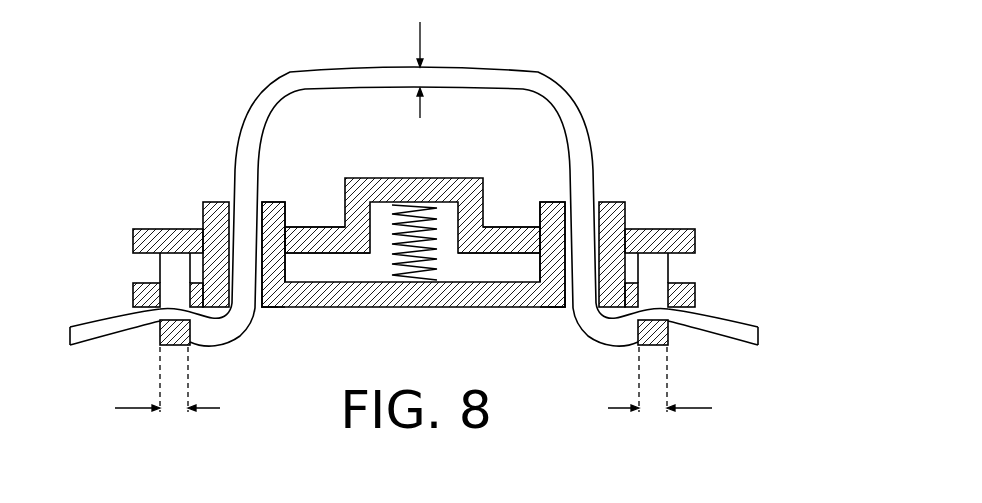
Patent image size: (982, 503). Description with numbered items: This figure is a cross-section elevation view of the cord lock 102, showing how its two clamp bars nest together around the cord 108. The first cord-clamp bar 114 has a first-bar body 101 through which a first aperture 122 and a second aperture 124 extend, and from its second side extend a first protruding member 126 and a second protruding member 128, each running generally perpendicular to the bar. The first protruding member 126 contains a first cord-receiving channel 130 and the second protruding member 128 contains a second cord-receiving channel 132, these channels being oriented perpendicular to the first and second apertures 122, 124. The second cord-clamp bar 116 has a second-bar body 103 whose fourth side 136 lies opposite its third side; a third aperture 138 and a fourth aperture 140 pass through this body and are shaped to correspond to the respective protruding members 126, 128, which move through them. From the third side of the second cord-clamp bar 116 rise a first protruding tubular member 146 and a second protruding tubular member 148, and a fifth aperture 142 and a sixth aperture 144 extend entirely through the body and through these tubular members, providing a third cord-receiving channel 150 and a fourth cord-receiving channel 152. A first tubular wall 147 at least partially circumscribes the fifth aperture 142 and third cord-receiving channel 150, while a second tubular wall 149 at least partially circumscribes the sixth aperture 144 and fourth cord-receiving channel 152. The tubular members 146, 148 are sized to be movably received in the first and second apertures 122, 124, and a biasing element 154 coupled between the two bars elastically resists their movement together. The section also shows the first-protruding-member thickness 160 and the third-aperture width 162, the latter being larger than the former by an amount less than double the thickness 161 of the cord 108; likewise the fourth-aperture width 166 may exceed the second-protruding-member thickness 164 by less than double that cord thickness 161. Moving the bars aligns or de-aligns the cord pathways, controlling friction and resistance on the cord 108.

The first-bar body 101 is at (133, 242).
The cord lock 102 is at (703, 175).
The second-bar body 103 is at (133, 302).
The cord 108 is at (545, 82).
The first cord-clamp bar 114 is at (695, 242).
The second cord-clamp bar 116 is at (695, 287).
The first aperture 122 is at (202, 228).
The second aperture 124 is at (626, 228).
The first protruding member 126 is at (176, 298).
The second protruding member 128 is at (655, 347).
The first cord-receiving channel 130 is at (172, 267).
The second cord-receiving channel 132 is at (658, 267).
The fourth side 136 is at (413, 308).
The third aperture 138 is at (200, 344).
The fourth aperture 140 is at (635, 342).
The fifth aperture 142 is at (230, 202).
The sixth aperture 144 is at (598, 202).
The first protruding tubular member 146 is at (272, 202).
The first tubular wall 147 is at (287, 242).
The second protruding tubular member 148 is at (555, 202).
The second tubular wall 149 is at (540, 242).
The third cord-receiving channel 150 is at (257, 307).
The fourth cord-receiving channel 152 is at (569, 308).
The biasing element 154 is at (430, 271).
The first-protruding-member thickness 160 is at (144, 384).
The thickness of the cord 161 is at (420, 59).
The third-aperture width 162 is at (200, 294).
The second-protruding-member thickness 164 is at (682, 384).
The fourth-aperture width 166 is at (625, 294).